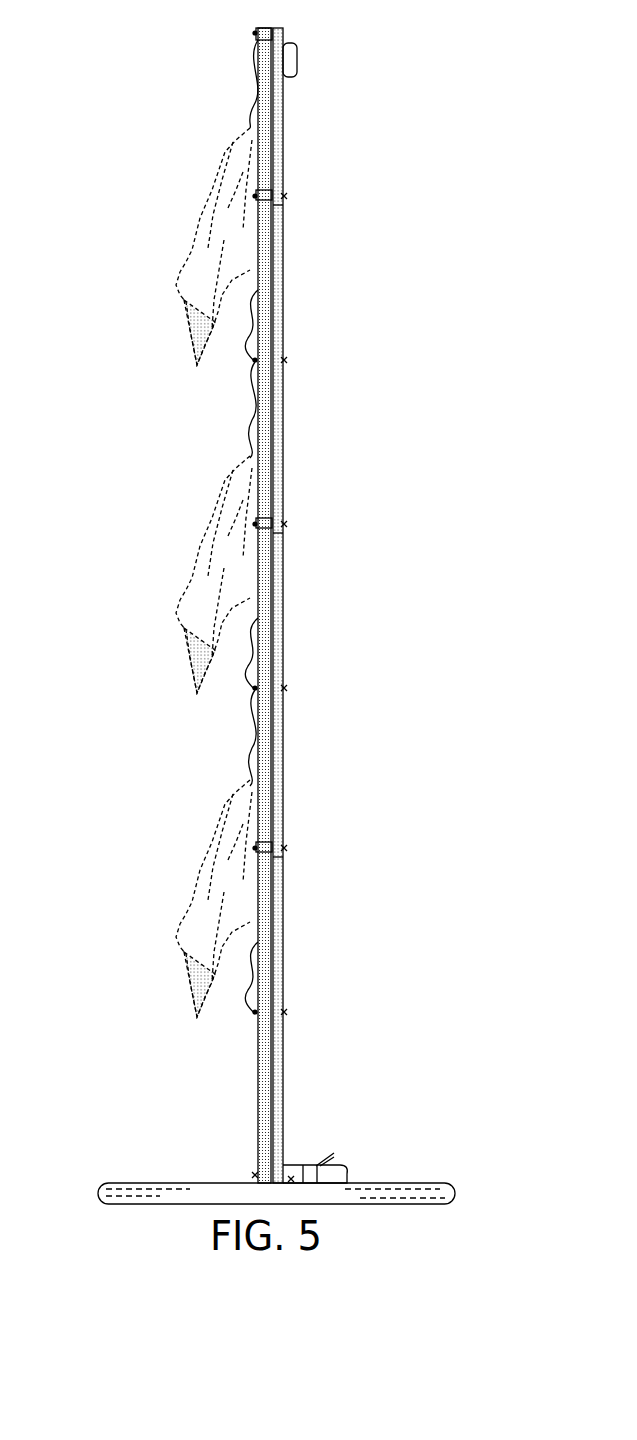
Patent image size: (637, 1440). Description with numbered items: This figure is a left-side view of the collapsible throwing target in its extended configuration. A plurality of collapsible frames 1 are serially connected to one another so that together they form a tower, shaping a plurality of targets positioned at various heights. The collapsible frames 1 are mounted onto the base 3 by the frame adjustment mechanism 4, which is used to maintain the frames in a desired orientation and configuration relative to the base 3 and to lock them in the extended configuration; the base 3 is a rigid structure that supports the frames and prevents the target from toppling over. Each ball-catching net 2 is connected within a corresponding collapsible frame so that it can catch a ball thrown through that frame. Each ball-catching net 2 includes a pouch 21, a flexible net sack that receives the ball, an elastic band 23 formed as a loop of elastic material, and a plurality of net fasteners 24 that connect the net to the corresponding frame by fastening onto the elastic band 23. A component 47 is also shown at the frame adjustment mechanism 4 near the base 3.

The collapsible frame 1 is at (358, 221).
The ball-catching net 2 is at (88, 298).
The base 3 is at (210, 1190).
The frame adjustment mechanism 4 is at (310, 1113).
The pouch 21 is at (184, 266).
The elastic band 23 is at (258, 62).
The net fastener 24 is at (254, 34).
The clamp bracket 47 is at (312, 1143).